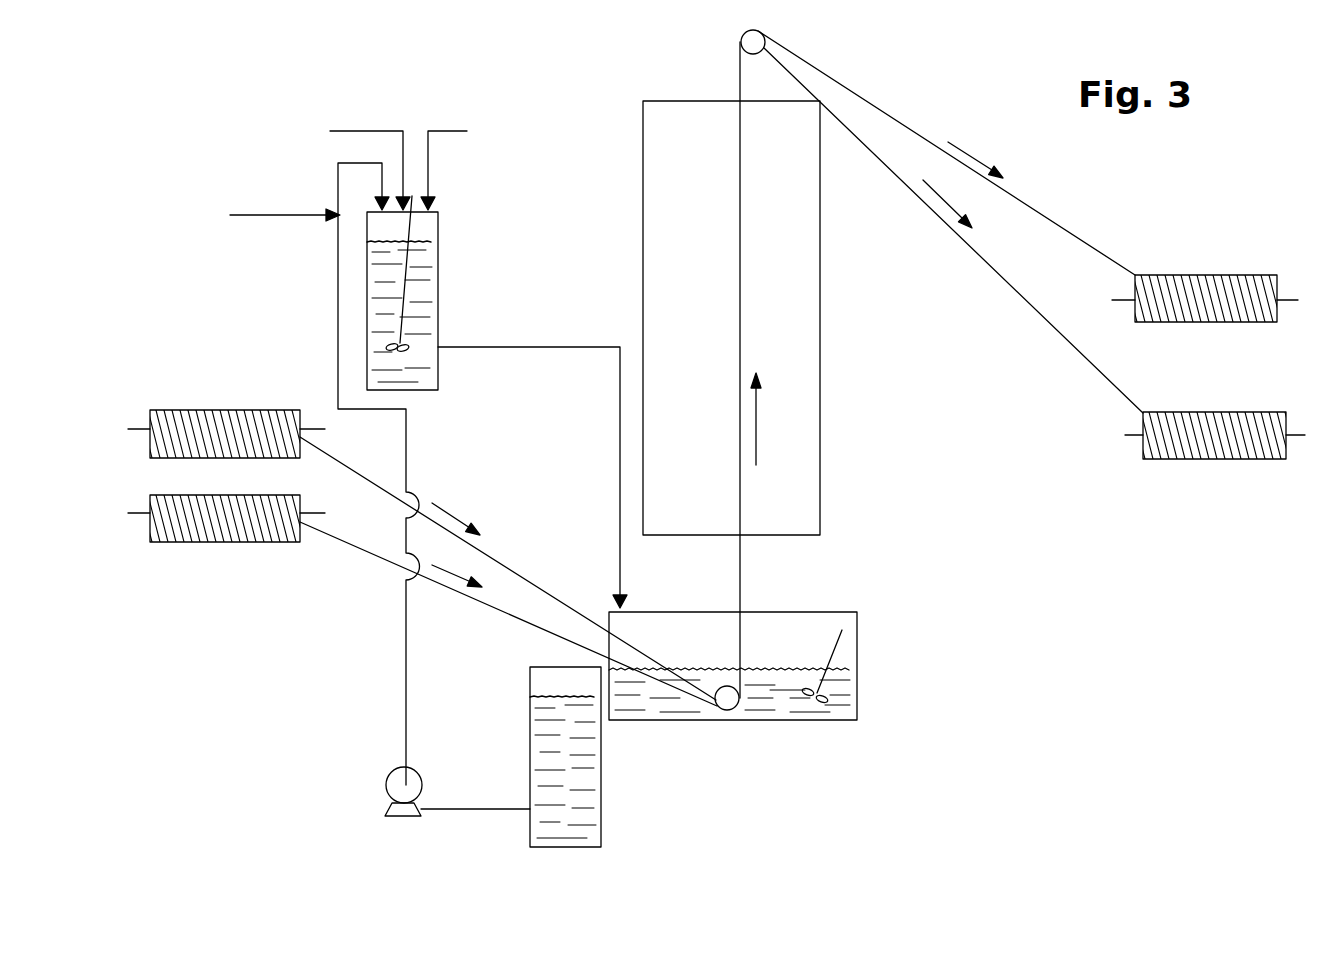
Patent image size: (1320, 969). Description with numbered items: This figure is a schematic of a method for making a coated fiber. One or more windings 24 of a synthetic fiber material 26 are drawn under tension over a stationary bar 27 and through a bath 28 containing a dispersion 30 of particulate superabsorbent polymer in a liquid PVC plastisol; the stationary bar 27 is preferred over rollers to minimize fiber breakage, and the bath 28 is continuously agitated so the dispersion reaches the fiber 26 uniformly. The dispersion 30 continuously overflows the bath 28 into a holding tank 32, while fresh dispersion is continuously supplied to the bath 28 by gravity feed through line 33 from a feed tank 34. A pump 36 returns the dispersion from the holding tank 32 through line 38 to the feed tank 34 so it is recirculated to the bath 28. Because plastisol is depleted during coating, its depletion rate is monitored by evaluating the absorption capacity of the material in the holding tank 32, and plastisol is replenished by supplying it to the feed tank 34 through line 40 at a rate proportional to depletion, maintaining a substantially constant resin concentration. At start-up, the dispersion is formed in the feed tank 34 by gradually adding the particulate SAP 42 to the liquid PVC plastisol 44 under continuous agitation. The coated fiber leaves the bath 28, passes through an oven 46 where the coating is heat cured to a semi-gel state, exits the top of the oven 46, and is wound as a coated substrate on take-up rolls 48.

The windings 24 is at (243, 410).
The synthetic fiber material 26 is at (500, 608).
The stationary bar 27 is at (730, 712).
The bath 28 is at (776, 700).
The dispersion 30 is at (845, 712).
The holding tank 32 is at (602, 778).
The line 33 is at (520, 350).
The feed tank 34 is at (440, 287).
The pump 36 is at (403, 817).
The line 38 is at (407, 659).
The line 40 is at (290, 213).
The particulate SAP 42 is at (383, 130).
The liquid PVC plastisol 44 is at (450, 130).
The oven 46 is at (819, 420).
The take-up rolls 48 is at (1258, 323).